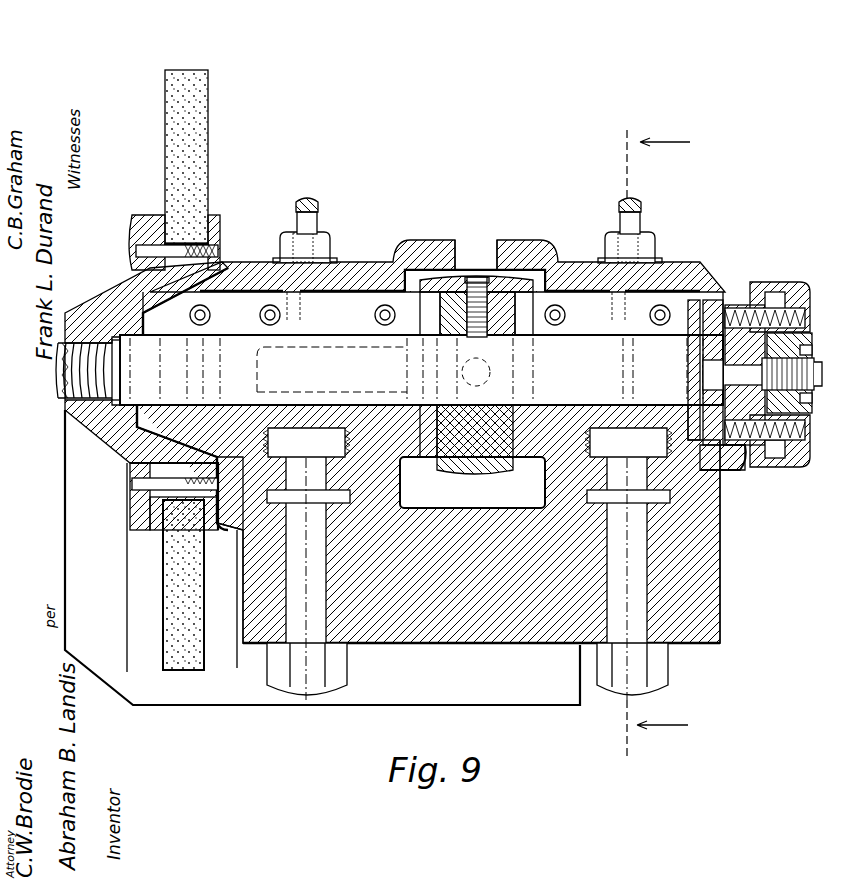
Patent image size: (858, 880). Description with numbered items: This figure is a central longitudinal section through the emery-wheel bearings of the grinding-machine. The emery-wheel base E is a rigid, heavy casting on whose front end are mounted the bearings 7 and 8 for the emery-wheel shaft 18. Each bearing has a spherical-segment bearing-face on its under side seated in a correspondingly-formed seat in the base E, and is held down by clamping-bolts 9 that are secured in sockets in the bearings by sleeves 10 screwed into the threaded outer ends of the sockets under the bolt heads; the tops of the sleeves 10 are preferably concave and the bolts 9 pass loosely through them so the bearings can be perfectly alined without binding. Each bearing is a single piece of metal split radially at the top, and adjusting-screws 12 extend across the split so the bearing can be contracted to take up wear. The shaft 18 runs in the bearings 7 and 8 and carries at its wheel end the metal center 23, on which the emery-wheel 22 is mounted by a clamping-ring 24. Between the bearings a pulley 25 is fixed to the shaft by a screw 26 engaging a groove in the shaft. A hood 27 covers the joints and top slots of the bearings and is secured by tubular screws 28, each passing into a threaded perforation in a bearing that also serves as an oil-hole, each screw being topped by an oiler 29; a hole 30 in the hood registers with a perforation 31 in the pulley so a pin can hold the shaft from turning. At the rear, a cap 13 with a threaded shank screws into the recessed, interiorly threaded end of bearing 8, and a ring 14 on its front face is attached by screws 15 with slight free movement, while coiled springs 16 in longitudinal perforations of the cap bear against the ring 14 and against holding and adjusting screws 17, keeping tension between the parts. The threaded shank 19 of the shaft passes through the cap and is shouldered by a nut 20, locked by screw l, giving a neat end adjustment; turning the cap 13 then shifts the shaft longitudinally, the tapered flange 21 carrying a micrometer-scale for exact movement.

The bearing 7 is at (247, 315).
The bearing 8 is at (654, 315).
The clamping-bolts 9 is at (490, 343).
The sleeves 10 is at (345, 466).
The adjusting-screws 12 is at (258, 316).
The cap 13 is at (785, 293).
The ring 14 is at (720, 308).
The screws 15 is at (727, 447).
The coiled spring 16 is at (743, 307).
The holding and adjusting screw 17 is at (807, 327).
The emery-wheel shaft 18 is at (389, 370).
The shank 19 is at (815, 367).
The nut 20 is at (790, 348).
The tapered flange 21 is at (765, 305).
The emery-wheel 22 is at (196, 159).
The metal center 23 is at (106, 298).
The clamping-ring 24 is at (143, 235).
The pulley 25 is at (440, 290).
The screw 26 is at (481, 278).
The hood 27 is at (368, 262).
The tubular screws 28 is at (288, 245).
The oiler 29 is at (322, 192).
The hole 30 is at (466, 252).
The perforation 31 is at (481, 380).
The emery-wheel base E is at (485, 633).
The screw l is at (818, 385).